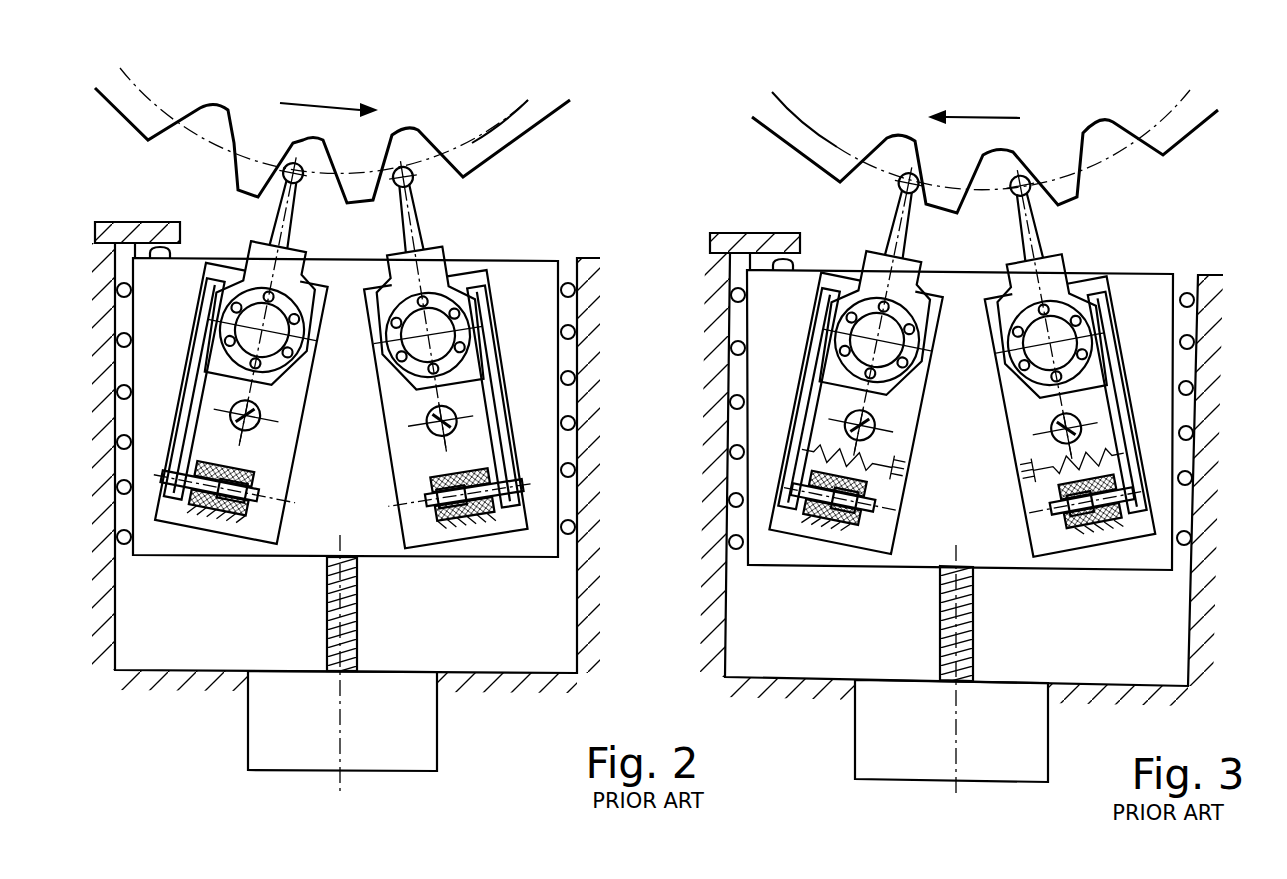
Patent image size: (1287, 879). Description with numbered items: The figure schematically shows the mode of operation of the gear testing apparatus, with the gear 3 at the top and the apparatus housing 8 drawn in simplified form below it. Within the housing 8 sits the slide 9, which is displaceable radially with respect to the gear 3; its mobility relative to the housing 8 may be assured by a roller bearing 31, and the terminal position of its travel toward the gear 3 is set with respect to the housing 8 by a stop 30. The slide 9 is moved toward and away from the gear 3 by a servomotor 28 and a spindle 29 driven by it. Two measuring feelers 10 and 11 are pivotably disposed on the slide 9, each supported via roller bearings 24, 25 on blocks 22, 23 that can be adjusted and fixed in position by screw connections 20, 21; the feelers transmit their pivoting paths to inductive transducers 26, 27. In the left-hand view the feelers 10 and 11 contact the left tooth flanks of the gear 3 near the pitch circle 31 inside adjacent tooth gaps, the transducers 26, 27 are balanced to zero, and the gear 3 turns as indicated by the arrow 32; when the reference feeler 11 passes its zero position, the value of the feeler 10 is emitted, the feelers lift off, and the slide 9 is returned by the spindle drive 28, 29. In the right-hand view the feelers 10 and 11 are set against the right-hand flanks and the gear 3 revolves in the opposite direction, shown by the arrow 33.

In FIG. 2, the gear 3 is at (188, 78).
In FIG. 3, the gear 3 is at (1133, 90).
In FIG. 2, the apparatus housing 8 is at (97, 643).
In FIG. 3, the apparatus housing 8 is at (1208, 593).
In FIG. 2, the slide 9 is at (573, 260).
In FIG. 2, the measuring feeler 10 is at (422, 210).
In FIG. 3, the measuring feeler 10 is at (1040, 237).
In FIG. 2, the measuring feeler 11 is at (280, 213).
In FIG. 3, the measuring feeler 11 is at (903, 227).
In FIG. 2, the screw connection 20 is at (460, 428).
In FIG. 3, the screw connection 20 is at (1083, 437).
In FIG. 2, the screw connection 21 is at (223, 410).
In FIG. 3, the screw connection 21 is at (840, 430).
In FIG. 2, the block 22 is at (493, 267).
In FIG. 3, the block 22 is at (1093, 293).
In FIG. 2, the block 23 is at (207, 283).
In FIG. 3, the block 23 is at (792, 300).
In FIG. 2, the roller bearing 24 is at (470, 298).
In FIG. 3, the roller bearing 24 is at (1093, 337).
In FIG. 2, the roller bearing 25 is at (217, 338).
In FIG. 3, the roller bearing 25 is at (847, 372).
In FIG. 2, the inductive transducer 26 is at (490, 528).
In FIG. 3, the inductive transducer 26 is at (1117, 542).
In FIG. 2, the inductive transducer 27 is at (187, 512).
In FIG. 3, the inductive transducer 27 is at (807, 533).
In FIG. 2, the servomotor 28 is at (410, 723).
In FIG. 3, the servomotor 28 is at (888, 728).
In FIG. 2, the spindle 29 is at (330, 630).
In FIG. 3, the spindle 29 is at (987, 643).
In FIG. 2, the stop 30 is at (150, 240).
In FIG. 3, the stop 30 is at (777, 233).
In FIG. 2, the roller bearing 31 is at (513, 110).
In FIG. 3, the roller bearing 31 is at (808, 122).
In FIG. 2, the arrow 32 is at (335, 92).
In FIG. 3, the arrow 33 is at (977, 112).